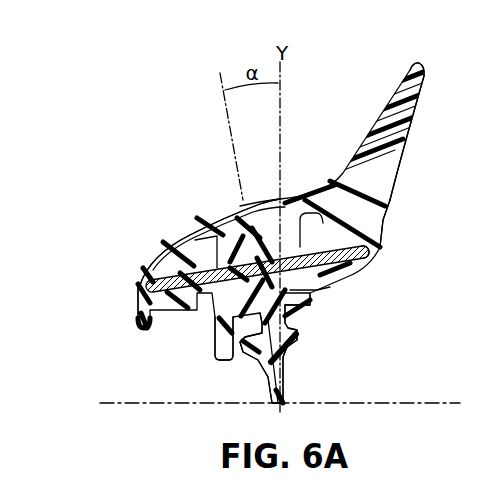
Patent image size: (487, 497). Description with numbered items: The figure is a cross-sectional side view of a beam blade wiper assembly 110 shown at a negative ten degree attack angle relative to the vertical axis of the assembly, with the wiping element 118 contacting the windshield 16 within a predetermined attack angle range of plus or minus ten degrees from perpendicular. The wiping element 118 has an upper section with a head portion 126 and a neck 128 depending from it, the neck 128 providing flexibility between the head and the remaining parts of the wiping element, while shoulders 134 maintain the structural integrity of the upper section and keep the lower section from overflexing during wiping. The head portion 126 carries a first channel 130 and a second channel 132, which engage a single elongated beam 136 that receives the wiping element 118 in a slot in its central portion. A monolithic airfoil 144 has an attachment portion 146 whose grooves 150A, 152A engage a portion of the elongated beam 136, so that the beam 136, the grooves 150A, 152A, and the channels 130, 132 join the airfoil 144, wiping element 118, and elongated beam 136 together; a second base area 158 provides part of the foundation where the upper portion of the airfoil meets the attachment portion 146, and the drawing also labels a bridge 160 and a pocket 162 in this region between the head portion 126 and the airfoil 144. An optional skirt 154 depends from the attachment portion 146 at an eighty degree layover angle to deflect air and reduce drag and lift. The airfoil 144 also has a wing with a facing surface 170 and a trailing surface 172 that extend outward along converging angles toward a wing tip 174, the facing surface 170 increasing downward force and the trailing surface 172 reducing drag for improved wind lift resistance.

The wiper assembly 110 is at (186, 117).
The airfoil 144 is at (186, 186).
The body portion 162 is at (204, 218).
The top surface 160 is at (271, 198).
The head portion 126 is at (182, 222).
The second channel 132 is at (228, 232).
The first channel 130 is at (167, 250).
The groove 150A is at (158, 262).
The attachment portion 146 is at (130, 298).
The skirt 154 is at (139, 327).
The wiping element 118 is at (186, 356).
The shoulders 134 is at (224, 360).
The elongated beam 136 is at (318, 282).
The neck 128 is at (315, 292).
The second base area 158 is at (373, 210).
The groove 152A is at (373, 250).
The facing surface 170 is at (389, 101).
The trailing surface 172 is at (413, 112).
The wing tip 174 is at (418, 63).
The windshield 16 is at (390, 405).